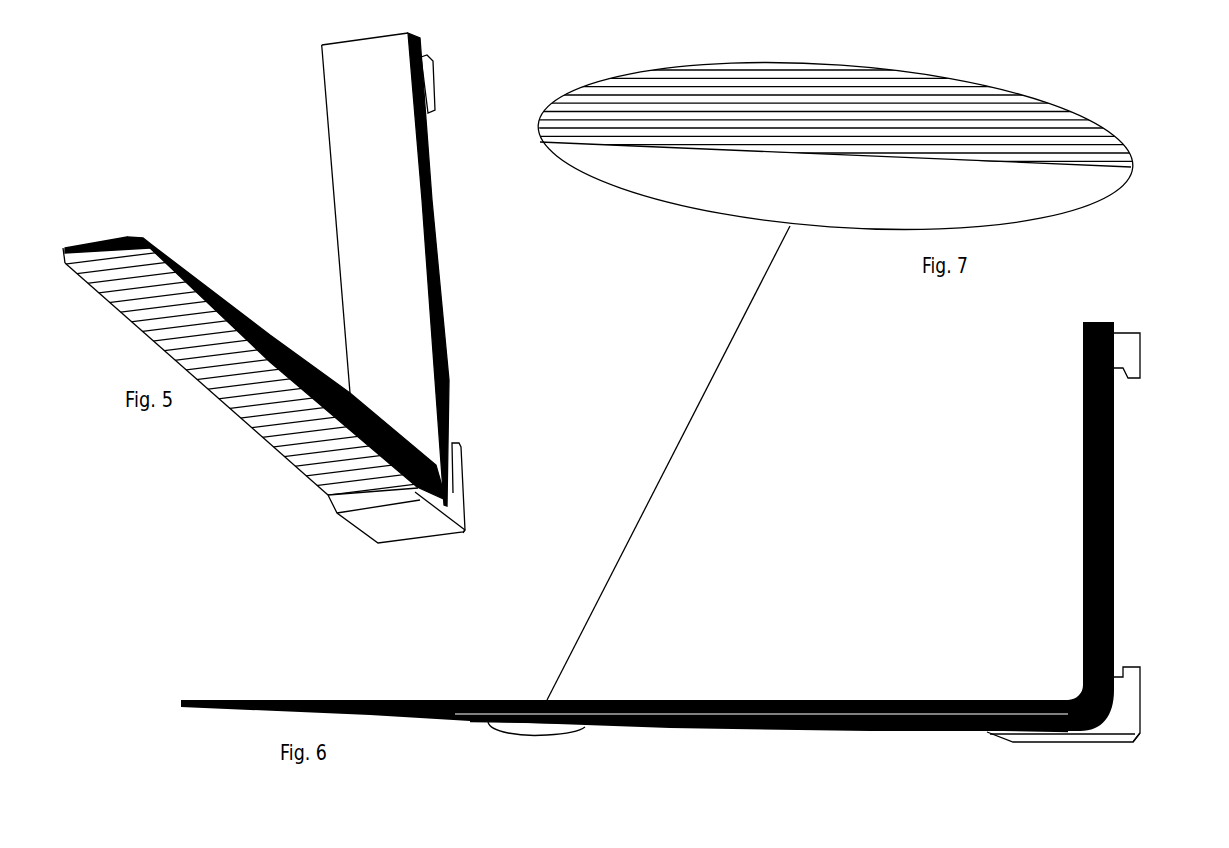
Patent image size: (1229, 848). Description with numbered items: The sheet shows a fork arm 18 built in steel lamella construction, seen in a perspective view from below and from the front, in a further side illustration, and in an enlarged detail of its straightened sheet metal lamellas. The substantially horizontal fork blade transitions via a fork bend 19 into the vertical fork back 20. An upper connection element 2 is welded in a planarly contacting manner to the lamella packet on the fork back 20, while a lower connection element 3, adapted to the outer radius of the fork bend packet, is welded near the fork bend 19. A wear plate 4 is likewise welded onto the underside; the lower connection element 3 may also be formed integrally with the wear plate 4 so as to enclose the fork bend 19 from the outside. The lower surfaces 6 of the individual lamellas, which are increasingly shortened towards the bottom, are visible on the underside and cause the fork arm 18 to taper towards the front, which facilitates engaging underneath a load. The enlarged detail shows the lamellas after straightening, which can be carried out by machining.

In FIG. 5, the upper connection element 2 is at (428, 77).
In FIG. 6, the upper connection element 2 is at (1132, 353).
In FIG. 5, the lower connection element 3 is at (457, 505).
In FIG. 6, the lower connection element 3 is at (1128, 697).
In FIG. 5, the wear plate 4 is at (385, 523).
In FIG. 6, the wear plate 4 is at (1028, 737).
In FIG. 5, the lower surfaces 6 is at (127, 277).
In FIG. 6, the fork arm 18 is at (950, 733).
In FIG. 6, the fork bend 19 is at (1102, 722).
In FIG. 6, the fork back 20 is at (1114, 520).